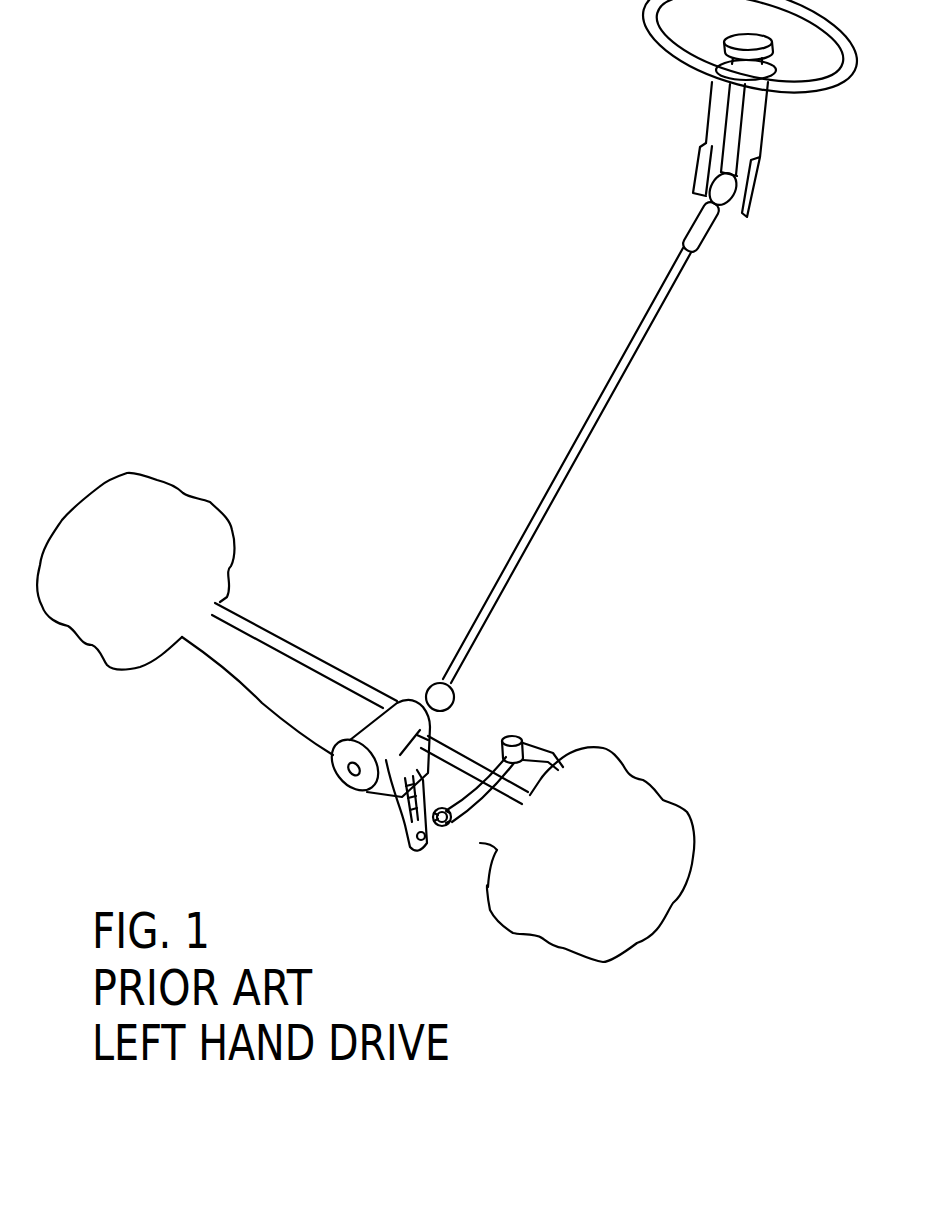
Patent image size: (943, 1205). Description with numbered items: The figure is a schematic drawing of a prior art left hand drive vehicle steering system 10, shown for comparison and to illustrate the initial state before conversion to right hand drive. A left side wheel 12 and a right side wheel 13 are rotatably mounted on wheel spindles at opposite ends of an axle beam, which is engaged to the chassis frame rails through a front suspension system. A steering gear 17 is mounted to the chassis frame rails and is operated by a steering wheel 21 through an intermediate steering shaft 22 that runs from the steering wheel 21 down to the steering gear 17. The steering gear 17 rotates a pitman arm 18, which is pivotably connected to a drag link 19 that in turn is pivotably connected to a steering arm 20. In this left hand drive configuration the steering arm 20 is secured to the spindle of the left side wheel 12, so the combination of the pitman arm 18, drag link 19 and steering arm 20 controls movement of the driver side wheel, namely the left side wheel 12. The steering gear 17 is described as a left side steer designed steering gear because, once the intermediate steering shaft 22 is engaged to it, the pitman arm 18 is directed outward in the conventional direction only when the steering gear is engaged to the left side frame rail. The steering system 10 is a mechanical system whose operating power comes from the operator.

The vehicle steering system 10 is at (653, 599).
The left side wheel 12 is at (698, 805).
The right side wheel 13 is at (188, 489).
The steering gear 17 is at (403, 696).
The pitman arm 18 is at (400, 831).
The drag link 19 is at (476, 809).
The steering arm 20 is at (549, 741).
The steering wheel 21 is at (803, 99).
The intermediate steering shaft 22 is at (508, 608).